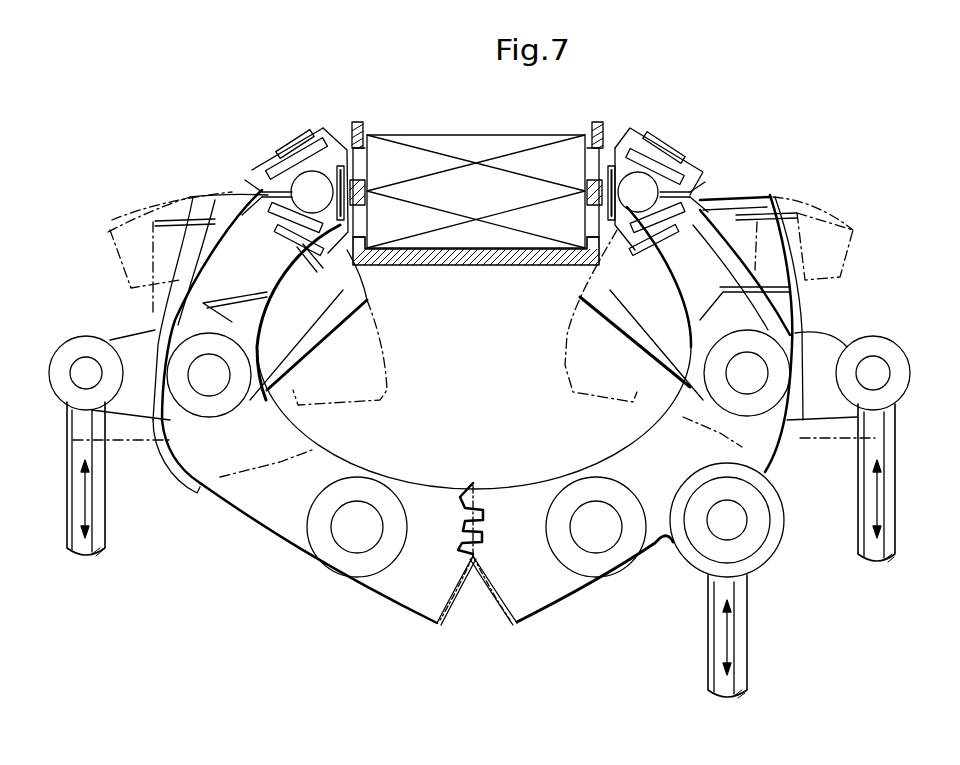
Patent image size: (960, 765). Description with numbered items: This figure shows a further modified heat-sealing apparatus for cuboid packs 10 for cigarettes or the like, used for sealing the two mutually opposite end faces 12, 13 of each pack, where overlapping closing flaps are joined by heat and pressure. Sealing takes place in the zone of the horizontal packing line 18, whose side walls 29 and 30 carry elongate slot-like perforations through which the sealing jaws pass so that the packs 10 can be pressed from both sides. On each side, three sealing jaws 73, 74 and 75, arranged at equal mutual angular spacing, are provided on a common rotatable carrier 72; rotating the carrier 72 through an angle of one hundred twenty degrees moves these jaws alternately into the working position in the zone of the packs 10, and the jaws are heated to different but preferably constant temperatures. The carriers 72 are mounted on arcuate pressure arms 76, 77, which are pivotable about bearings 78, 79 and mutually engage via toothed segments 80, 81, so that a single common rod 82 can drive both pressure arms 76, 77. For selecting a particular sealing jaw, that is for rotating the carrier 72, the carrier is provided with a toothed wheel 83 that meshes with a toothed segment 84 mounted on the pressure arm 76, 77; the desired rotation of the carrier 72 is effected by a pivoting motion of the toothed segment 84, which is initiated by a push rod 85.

The pack 10 is at (470, 133).
The end face 12 is at (368, 160).
The end face 13 is at (584, 160).
The packing line 18 is at (478, 266).
The side wall 29 is at (357, 121).
The side wall 30 is at (597, 121).
The rotatable carrier 72 is at (308, 186).
The sealing jaw 73 is at (328, 146).
The sealing jaw 74 is at (312, 143).
The sealing jaw 75 is at (307, 228).
The pressure arm 76 is at (290, 522).
The pressure arm 77 is at (660, 540).
The bearing 78 is at (351, 574).
The bearing 79 is at (603, 574).
The toothed segment 80 is at (438, 624).
The toothed segment 81 is at (514, 623).
The rod 82 is at (740, 637).
The toothed wheel 83 is at (263, 186).
The toothed segment 84 is at (193, 196).
The push rod 85 is at (97, 525).